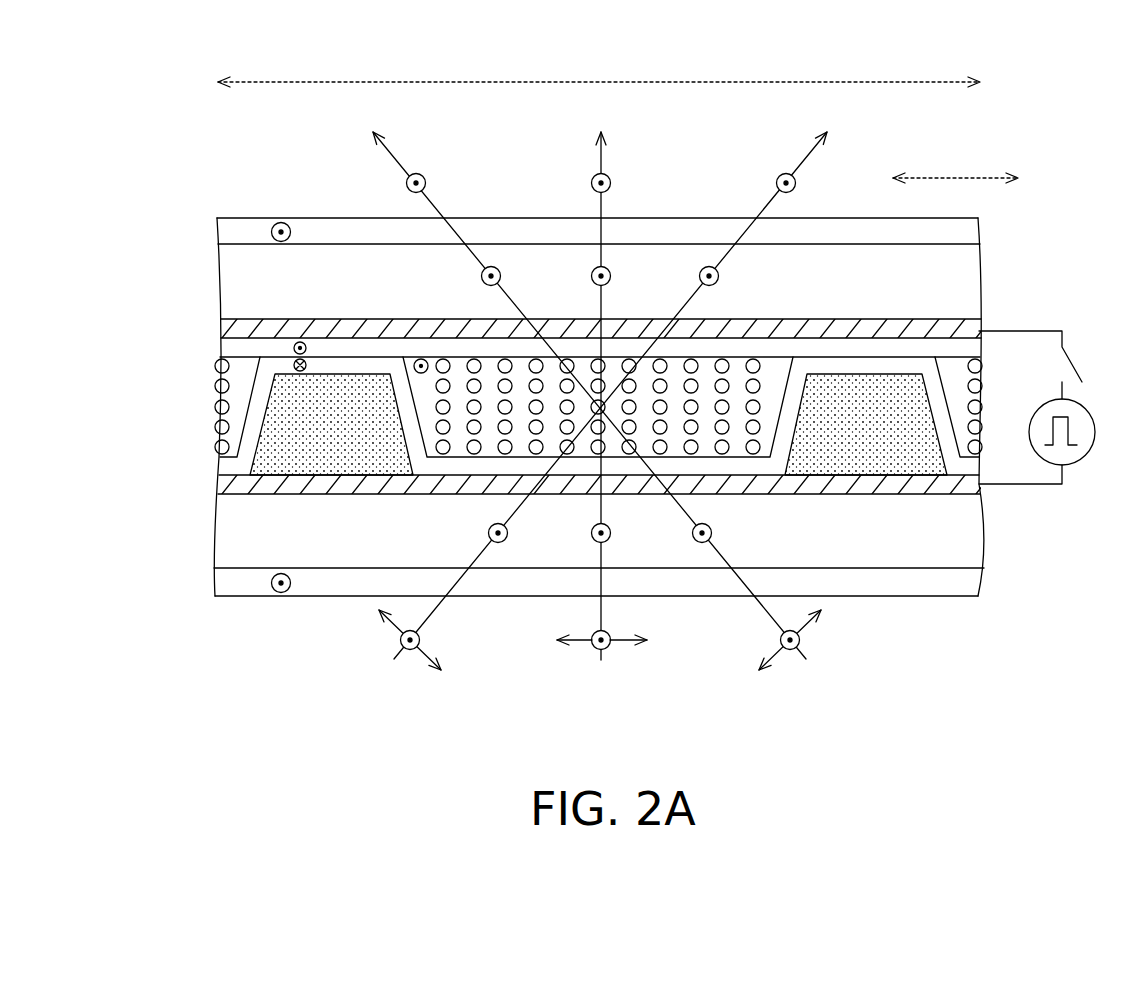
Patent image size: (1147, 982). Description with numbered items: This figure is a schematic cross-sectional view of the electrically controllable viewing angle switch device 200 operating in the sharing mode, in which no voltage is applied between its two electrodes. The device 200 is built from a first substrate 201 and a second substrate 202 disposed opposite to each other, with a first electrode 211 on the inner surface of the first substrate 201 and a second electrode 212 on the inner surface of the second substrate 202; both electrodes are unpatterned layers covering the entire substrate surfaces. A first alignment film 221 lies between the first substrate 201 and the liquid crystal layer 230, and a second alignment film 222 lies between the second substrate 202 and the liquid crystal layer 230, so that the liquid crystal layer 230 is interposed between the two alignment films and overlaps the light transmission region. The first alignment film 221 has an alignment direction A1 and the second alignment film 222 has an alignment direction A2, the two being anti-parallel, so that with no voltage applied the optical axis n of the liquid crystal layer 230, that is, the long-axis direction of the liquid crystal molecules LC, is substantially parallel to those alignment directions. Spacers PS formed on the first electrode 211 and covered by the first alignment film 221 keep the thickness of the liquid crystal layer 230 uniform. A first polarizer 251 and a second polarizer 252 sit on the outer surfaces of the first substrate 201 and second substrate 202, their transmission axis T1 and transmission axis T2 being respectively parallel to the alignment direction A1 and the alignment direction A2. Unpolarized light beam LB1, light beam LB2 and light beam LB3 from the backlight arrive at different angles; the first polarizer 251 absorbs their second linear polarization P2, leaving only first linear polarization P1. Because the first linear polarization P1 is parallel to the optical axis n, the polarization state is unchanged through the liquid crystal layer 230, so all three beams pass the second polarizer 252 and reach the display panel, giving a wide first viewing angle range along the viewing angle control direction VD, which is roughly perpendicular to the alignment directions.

The electrically controllable viewing angle switch device 200 is at (1080, 702).
The first substrate 201 is at (240, 541).
The second substrate 202 is at (237, 270).
The first electrode 211 is at (237, 484).
The second electrode 212 is at (240, 331).
The first alignment film 221 is at (237, 466).
The second alignment film 222 is at (243, 349).
The liquid crystal layer 230 is at (215, 377).
The first polarizer 251 is at (237, 583).
The second polarizer 252 is at (237, 232).
The liquid crystal molecules LC is at (216, 428).
The spacers PS is at (867, 453).
The transmission axis of the first polarizer T1 is at (290, 593).
The transmission axis of the second polarizer T2 is at (291, 224).
The alignment direction of the first alignment film A1 is at (297, 360).
The alignment direction of the second alignment film A2 is at (307, 345).
The optical axis of the liquid crystal layer n is at (420, 357).
The light beam LB1 is at (605, 162).
The light beam LB2 is at (402, 158).
The light beam LB3 is at (802, 160).
The first linear polarization P1 is at (699, 276).
The second linear polarization P2 is at (585, 642).
The viewing angle control direction VD is at (955, 162).